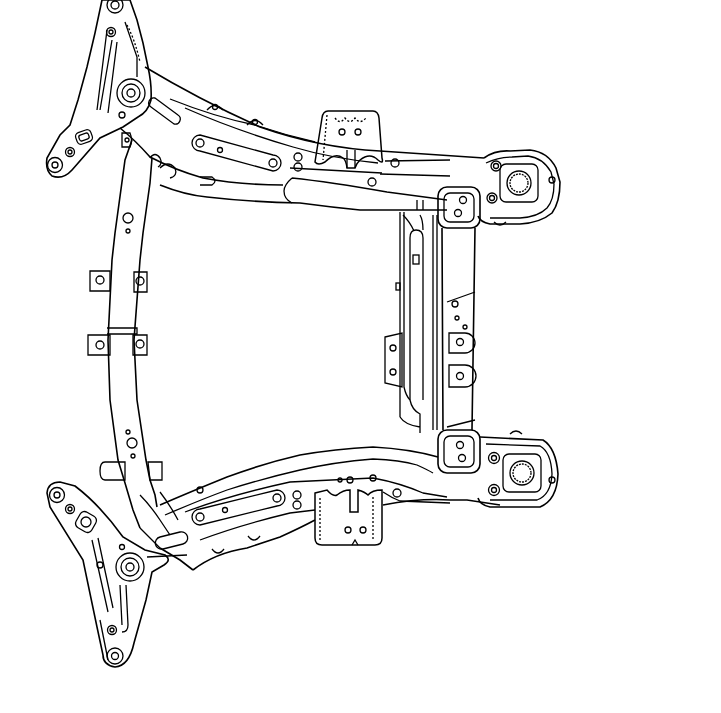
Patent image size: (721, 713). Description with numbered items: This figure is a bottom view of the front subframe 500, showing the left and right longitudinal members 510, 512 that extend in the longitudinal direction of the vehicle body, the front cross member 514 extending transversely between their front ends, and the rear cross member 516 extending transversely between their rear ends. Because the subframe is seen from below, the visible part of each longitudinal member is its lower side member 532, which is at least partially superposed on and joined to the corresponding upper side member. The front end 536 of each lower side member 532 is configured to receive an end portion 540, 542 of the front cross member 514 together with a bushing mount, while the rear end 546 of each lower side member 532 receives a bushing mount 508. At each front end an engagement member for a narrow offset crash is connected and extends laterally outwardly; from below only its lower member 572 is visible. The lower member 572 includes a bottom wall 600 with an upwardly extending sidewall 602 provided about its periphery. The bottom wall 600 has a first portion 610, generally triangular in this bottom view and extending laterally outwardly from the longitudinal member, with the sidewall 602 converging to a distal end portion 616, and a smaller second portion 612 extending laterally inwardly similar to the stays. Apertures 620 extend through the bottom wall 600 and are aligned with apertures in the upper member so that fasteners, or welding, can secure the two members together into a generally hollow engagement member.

The front subframe 500 is at (606, 200).
The bushing mounts 508 is at (516, 498).
The left longitudinal member 510 is at (440, 502).
The right longitudinal member 512 is at (416, 150).
The front cross member 514 is at (143, 416).
The rear cross member 516 is at (474, 343).
The lower side member 532 is at (305, 190).
The front end of lower side member 536 is at (176, 562).
The end portion of front cross member 540 is at (156, 492).
The end portion of front cross member 542 is at (153, 185).
The rear end of lower side member 546 is at (537, 152).
The lower member 572 is at (135, 40).
The bottom wall 600 is at (98, 53).
The sidewall 602 is at (100, 640).
The first portion 610 is at (98, 608).
The second portion 612 is at (73, 528).
The distal end portion 616 is at (128, 654).
The apertures 620 is at (63, 150).